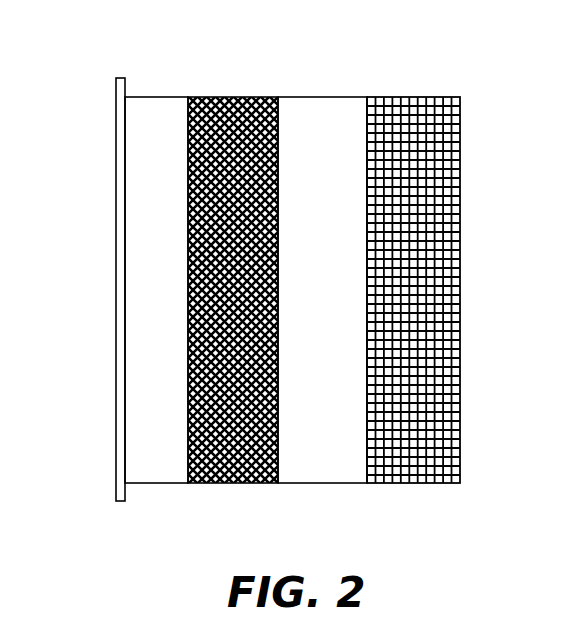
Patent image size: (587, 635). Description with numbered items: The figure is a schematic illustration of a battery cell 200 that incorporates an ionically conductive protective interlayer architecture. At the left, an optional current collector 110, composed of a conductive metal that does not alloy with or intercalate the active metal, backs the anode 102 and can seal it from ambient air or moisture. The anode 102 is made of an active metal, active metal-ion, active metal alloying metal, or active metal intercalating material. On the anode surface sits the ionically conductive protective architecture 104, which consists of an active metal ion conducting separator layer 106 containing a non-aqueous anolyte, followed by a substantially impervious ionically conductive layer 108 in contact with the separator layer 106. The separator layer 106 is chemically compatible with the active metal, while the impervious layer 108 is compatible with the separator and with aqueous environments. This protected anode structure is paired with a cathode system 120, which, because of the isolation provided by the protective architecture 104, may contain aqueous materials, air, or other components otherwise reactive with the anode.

The anode 102 is at (166, 108).
The ionically conductive protective architecture 104 is at (293, 293).
The separator layer 106 is at (225, 100).
The substantially impervious ionically conductive layer 108 is at (331, 108).
The current collector 110 is at (122, 79).
The cathode system 120 is at (412, 105).
The cell 200 is at (293, 293).